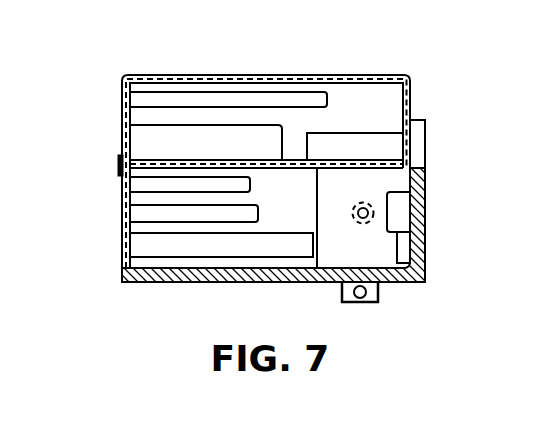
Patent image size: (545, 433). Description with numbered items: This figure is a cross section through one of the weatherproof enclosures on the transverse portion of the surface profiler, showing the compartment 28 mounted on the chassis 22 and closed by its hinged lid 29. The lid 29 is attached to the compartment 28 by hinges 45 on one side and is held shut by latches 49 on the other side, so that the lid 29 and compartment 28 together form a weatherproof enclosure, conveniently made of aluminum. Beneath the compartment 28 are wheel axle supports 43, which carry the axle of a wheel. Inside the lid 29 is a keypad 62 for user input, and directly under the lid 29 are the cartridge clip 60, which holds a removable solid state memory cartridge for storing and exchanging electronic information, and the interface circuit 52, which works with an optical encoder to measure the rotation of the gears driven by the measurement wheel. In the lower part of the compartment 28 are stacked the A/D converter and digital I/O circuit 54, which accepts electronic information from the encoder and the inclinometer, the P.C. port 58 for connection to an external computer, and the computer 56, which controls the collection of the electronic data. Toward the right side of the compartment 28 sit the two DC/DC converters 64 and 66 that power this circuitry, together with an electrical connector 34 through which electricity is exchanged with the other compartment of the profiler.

The chassis 22 is at (395, 287).
The compartment 28 is at (123, 214).
The hinged lid 29 is at (330, 78).
The electrical connector 34 is at (372, 220).
The wheel axle support 43 is at (340, 296).
The hinge 45 is at (118, 162).
The latch 49 is at (425, 155).
The interface circuit 52 is at (380, 145).
The A/D converter and digital I/O circuit 54 is at (148, 183).
The computer 56 is at (148, 240).
The P.C. port 58 is at (170, 212).
The cartridge clip 60 is at (250, 138).
The keypad 62 is at (195, 102).
The DC/DC converter 64 is at (393, 203).
The DC/DC converter 66 is at (423, 253).